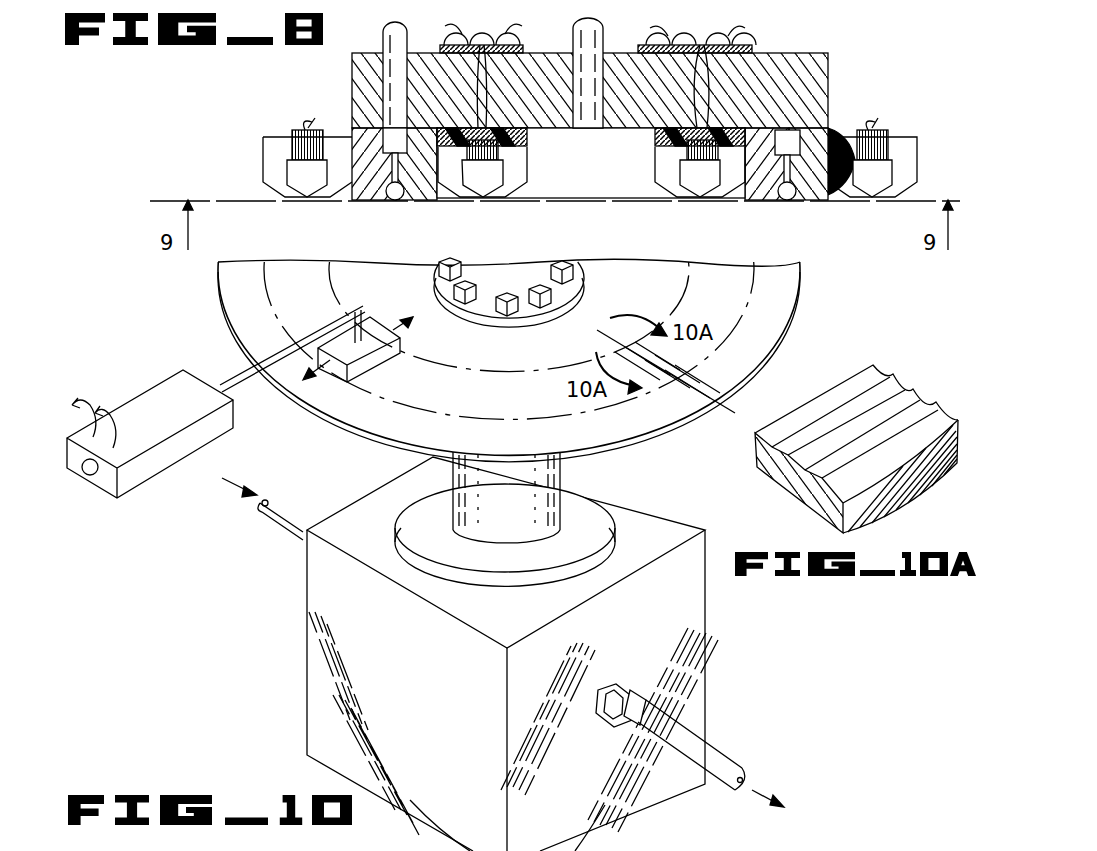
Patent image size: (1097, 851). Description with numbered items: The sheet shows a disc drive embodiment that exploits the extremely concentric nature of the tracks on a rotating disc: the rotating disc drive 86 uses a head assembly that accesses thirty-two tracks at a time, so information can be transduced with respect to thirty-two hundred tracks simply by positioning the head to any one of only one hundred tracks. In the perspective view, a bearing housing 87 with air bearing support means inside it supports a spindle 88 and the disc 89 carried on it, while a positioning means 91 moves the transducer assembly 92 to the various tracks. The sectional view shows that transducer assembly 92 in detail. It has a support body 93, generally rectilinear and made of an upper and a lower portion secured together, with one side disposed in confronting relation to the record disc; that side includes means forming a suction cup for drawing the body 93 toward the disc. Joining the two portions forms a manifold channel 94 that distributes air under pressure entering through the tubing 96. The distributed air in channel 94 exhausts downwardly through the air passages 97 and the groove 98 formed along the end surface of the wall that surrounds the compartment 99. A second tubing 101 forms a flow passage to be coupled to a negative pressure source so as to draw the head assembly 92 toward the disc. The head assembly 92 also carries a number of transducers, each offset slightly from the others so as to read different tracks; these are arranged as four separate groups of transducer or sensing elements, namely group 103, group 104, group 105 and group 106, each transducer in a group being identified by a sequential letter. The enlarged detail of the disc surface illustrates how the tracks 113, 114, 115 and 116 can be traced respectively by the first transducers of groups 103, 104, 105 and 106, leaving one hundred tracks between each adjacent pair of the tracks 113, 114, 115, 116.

In FIG. 10, the rotating disc drive 86 is at (222, 563).
In FIG. 10, the bearing housing 87 is at (448, 686).
In FIG. 10, the spindle 88 is at (512, 496).
In FIG. 10, the disc 89 is at (347, 423).
In FIG. 10, the positioning means 91 is at (143, 418).
In FIG. 8, the transducer assembly 92 is at (842, 90).
In FIG. 10, the transducer assembly 92 is at (370, 343).
In FIG. 8, the support body 93 is at (365, 85).
In FIG. 8, the manifold channel 94 is at (785, 145).
In FIG. 8, the tubing 96 is at (385, 48).
In FIG. 8, the air passages 97 is at (380, 196).
In FIG. 8, the groove 98 is at (785, 197).
In FIG. 8, the compartment 99 is at (591, 163).
In FIG. 8, the tubing 101 is at (700, 45).
In FIG. 8, the group of transducer elements 103 is at (665, 185).
In FIG. 8, the group of transducer elements 104 is at (902, 188).
In FIG. 8, the group of transducer elements 105 is at (520, 197).
In FIG. 8, the group of transducer elements 106 is at (275, 152).
In FIG. 10, the track 113 is at (640, 350).
In FIG. 10A, the track 113 is at (793, 412).
In FIG. 10, the track 114 is at (620, 343).
In FIG. 10A, the track 114 is at (847, 417).
In FIG. 10, the track 115 is at (673, 350).
In FIG. 10A, the track 115 is at (883, 437).
In FIG. 10, the track 116 is at (673, 363).
In FIG. 10A, the track 116 is at (913, 437).